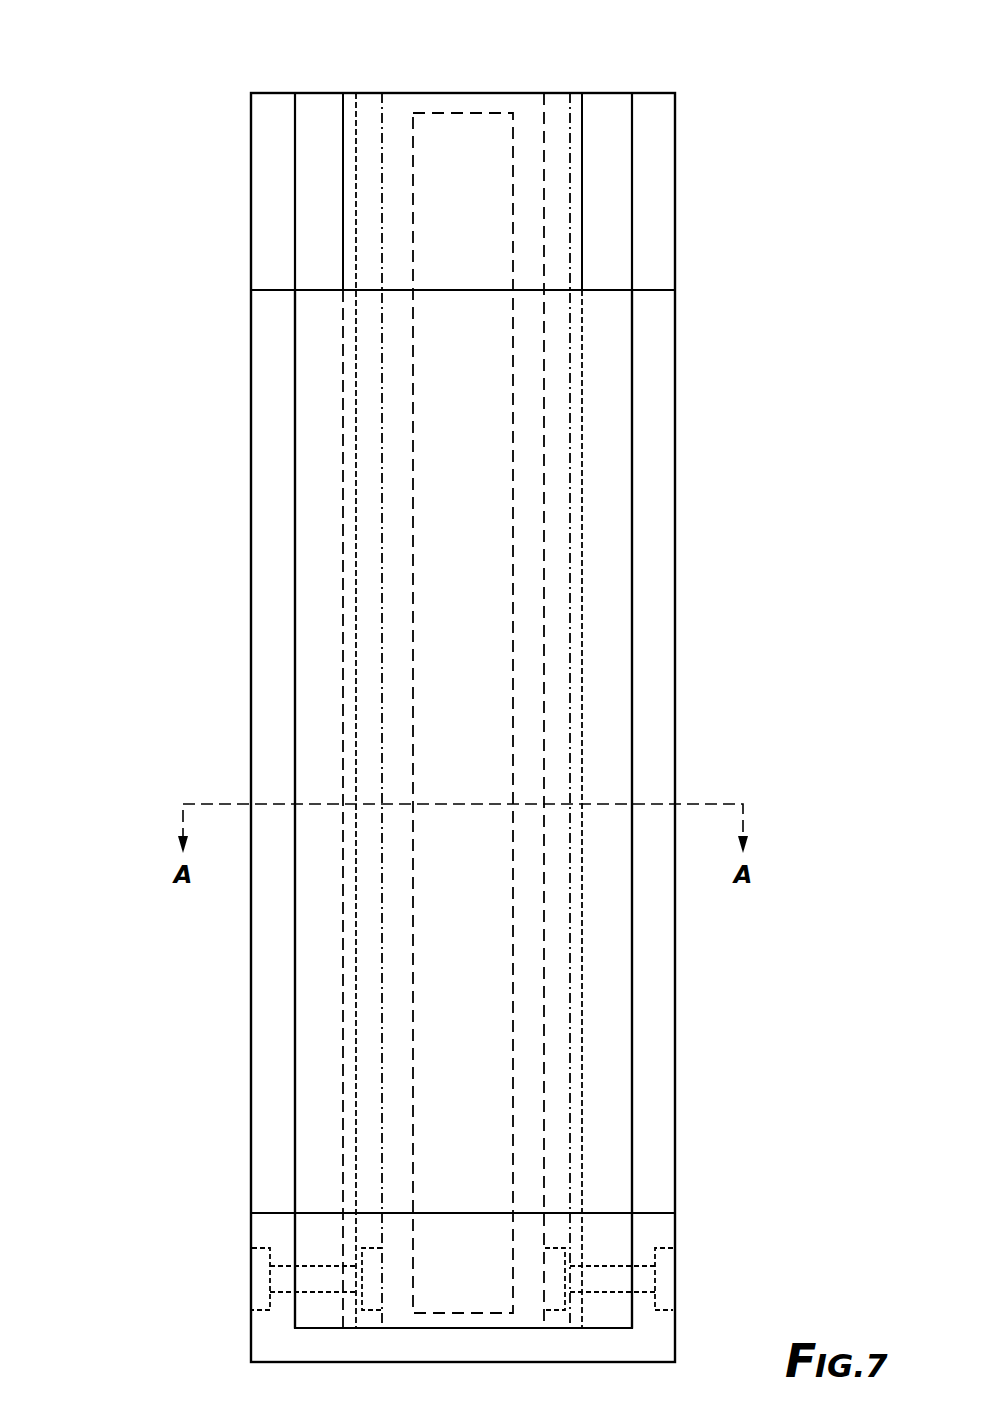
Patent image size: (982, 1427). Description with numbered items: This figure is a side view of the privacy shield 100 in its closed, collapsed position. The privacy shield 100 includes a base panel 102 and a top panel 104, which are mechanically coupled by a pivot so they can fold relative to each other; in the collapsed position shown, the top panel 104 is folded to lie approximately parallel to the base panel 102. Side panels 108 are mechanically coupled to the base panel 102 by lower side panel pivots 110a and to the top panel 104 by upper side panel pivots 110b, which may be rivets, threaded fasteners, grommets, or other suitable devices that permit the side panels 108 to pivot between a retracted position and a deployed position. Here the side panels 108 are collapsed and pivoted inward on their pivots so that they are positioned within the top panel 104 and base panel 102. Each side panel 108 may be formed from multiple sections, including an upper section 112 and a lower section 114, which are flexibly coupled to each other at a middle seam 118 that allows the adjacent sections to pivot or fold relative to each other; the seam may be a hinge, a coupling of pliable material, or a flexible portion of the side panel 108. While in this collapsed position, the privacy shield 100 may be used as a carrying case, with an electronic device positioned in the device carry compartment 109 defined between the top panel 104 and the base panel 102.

The privacy shield 100 is at (134, 108).
The base panel 102 is at (382, 83).
The top panel 104 is at (544, 83).
The side panels 108 is at (312, 963).
The device carry compartment 109 is at (513, 184).
The lower side panel pivots 110a is at (318, 1263).
The upper side panel pivots 110b is at (637, 1268).
The upper section 112 is at (612, 492).
The lower section 114 is at (315, 553).
The middle seam 118 is at (340, 658).